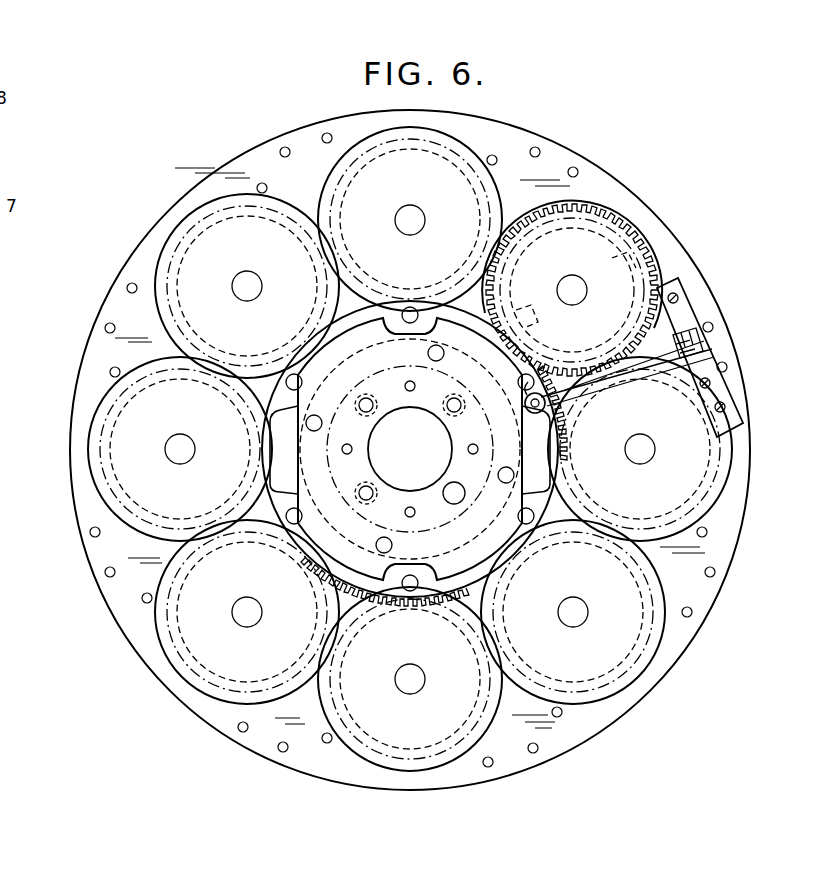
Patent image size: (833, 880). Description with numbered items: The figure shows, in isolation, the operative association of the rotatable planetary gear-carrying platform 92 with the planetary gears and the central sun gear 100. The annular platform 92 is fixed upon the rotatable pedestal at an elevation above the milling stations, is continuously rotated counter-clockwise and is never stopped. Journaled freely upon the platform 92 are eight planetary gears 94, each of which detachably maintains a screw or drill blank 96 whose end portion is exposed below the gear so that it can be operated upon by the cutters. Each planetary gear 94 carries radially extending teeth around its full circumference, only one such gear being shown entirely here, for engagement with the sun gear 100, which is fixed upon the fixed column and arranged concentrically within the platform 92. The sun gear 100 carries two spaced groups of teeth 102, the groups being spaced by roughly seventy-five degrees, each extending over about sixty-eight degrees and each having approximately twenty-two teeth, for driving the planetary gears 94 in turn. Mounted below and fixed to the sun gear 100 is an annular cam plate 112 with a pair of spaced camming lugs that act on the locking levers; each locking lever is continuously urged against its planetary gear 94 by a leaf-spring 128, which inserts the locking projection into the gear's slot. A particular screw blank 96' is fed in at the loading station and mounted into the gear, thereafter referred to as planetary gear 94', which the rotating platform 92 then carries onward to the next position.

The planetary gear-carrying platform 92 is at (617, 174).
The planetary gear 94 is at (410, 473).
The blank-carrying planetary gear 94' is at (443, 195).
The screw or drill blank 96 is at (395, 473).
The particular screw blank 96' is at (431, 231).
The sun gear 100 is at (283, 505).
The groups of teeth 102 is at (556, 402).
The annular cam plate 112 is at (272, 484).
The leaf-spring 128 is at (708, 363).